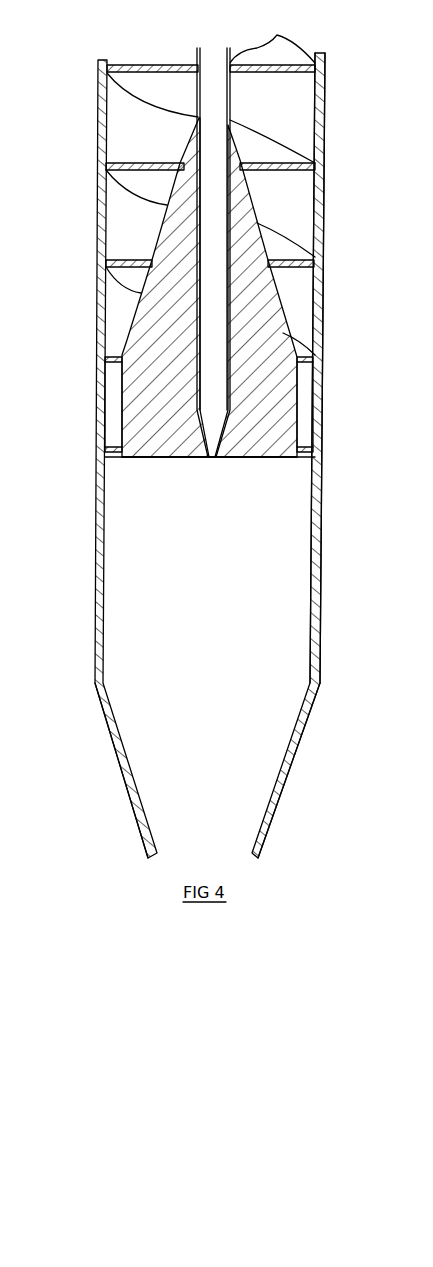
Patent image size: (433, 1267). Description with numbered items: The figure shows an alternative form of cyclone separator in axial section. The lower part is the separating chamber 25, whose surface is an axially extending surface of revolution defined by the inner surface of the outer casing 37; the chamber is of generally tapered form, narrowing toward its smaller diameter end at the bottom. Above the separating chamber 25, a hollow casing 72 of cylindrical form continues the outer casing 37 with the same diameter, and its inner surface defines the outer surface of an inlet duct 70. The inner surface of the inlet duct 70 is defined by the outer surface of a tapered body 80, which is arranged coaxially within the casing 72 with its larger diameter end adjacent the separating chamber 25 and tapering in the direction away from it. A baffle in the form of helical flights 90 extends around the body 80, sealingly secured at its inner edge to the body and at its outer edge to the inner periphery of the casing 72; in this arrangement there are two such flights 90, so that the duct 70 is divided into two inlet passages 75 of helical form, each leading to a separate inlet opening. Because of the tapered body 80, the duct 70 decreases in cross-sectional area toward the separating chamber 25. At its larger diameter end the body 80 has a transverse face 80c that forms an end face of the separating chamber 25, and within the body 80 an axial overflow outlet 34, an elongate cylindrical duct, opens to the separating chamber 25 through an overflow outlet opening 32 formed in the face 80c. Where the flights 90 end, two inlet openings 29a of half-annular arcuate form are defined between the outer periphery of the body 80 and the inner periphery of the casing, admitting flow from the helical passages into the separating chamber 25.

The separating chamber 25 is at (278, 545).
The outer casing 37 is at (317, 633).
The hollow casing 72 is at (321, 307).
The helical flight 90 is at (289, 73).
The helical inlet passage 75 is at (210, 214).
The tapered body 80 is at (280, 400).
The transverse face 80c is at (142, 458).
The axial overflow outlet 34 is at (213, 267).
The overflow outlet opening 32 is at (212, 458).
The inlet openings 29a is at (112, 465).
The inlet duct 70 is at (272, 102).